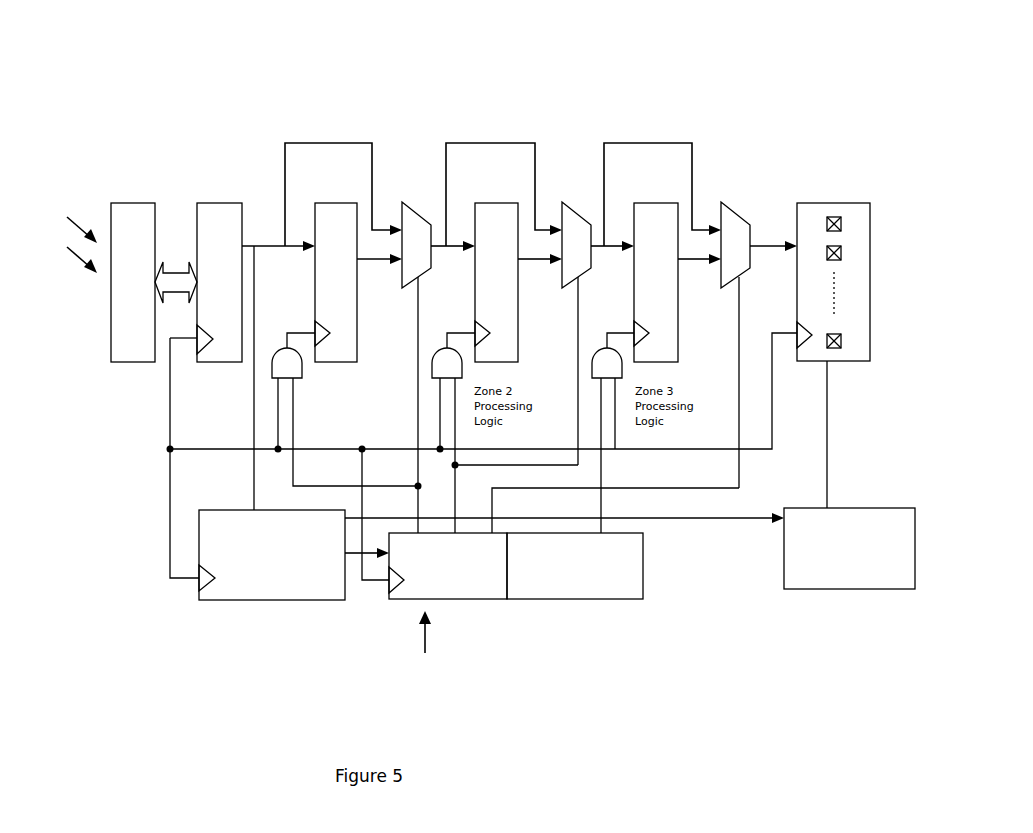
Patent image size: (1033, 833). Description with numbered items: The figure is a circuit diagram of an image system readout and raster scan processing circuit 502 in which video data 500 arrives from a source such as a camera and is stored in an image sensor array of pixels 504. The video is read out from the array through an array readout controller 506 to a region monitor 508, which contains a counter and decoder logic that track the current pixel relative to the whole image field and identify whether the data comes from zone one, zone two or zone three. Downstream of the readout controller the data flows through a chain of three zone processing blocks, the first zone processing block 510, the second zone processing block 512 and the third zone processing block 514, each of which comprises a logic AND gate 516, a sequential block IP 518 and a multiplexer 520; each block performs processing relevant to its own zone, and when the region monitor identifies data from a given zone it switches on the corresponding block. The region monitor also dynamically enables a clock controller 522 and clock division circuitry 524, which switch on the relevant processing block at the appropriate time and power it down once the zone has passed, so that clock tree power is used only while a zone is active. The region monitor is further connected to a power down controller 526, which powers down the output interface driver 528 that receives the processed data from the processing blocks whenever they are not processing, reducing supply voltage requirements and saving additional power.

The video data 500 is at (56, 229).
The processing circuit 502 is at (423, 646).
The image sensor array of pixels 504 is at (105, 303).
The array readout controller 506 is at (249, 205).
The region monitor 508 is at (265, 597).
The zone 1 processing block 510 is at (378, 133).
The zone 2 processing block 512 is at (508, 133).
The zone 3 processing block 514 is at (640, 148).
The logic AND gate 516 is at (278, 363).
The sequential block IP 518 is at (335, 192).
The multiplexer 520 is at (408, 220).
The clock controller 522 is at (483, 599).
The clock division circuitry 524 is at (598, 599).
The power down controller 526 is at (845, 597).
The output interface driver 528 is at (858, 203).